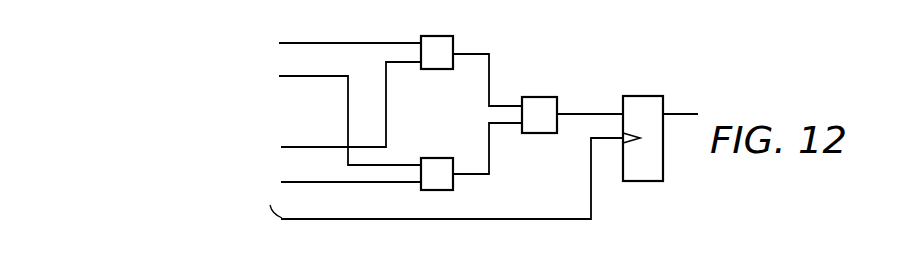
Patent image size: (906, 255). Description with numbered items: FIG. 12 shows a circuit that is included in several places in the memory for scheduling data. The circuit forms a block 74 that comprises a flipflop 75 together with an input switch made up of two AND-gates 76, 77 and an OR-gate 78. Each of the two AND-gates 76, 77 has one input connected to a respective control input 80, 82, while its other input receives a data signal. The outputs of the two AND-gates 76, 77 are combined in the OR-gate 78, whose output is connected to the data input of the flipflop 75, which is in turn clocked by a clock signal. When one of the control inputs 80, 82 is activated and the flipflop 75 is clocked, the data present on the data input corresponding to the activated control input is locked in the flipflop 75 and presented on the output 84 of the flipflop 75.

The block 74 is at (508, 62).
The flipflop 75 is at (640, 181).
The AND-gate 76 is at (438, 70).
The AND-gate 77 is at (437, 157).
The OR-gate 78 is at (537, 133).
The control input 80 is at (281, 146).
The control input 82 is at (281, 181).
The output 84 is at (686, 113).